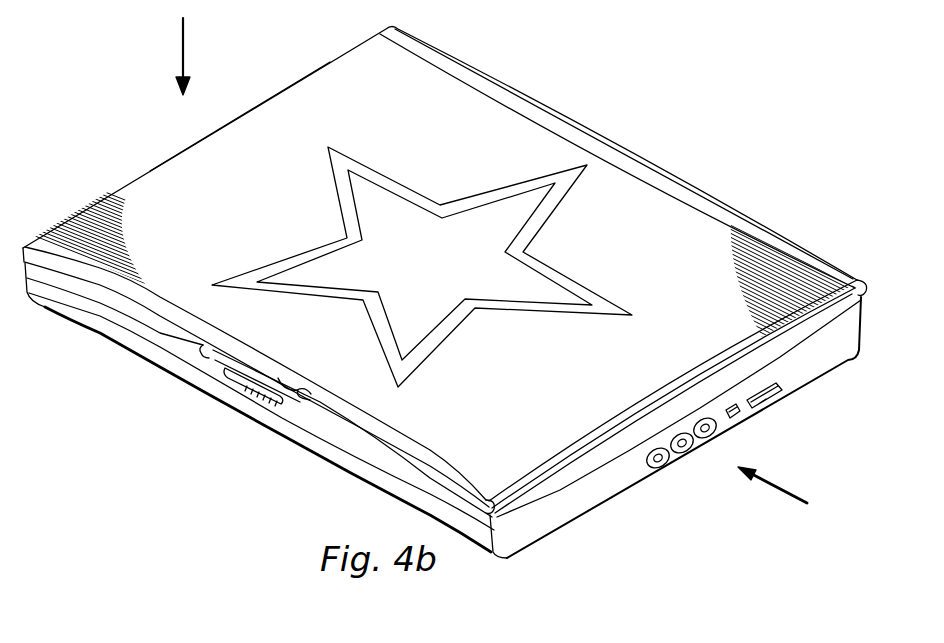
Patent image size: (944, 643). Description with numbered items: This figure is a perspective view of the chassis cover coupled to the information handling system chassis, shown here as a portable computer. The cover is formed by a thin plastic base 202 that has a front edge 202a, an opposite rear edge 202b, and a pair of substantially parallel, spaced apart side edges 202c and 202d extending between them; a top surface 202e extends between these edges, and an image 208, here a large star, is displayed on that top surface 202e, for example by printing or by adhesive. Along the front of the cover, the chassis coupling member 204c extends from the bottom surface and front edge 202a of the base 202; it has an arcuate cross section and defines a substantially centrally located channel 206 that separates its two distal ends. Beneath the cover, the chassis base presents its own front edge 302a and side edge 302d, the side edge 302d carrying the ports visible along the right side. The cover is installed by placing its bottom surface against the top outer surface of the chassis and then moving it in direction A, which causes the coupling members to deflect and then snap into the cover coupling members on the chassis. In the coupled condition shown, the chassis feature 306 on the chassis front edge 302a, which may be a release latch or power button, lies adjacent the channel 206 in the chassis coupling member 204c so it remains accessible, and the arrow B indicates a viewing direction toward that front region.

The base 202 is at (528, 97).
The front edge 202a is at (297, 380).
The rear edge 202b is at (614, 145).
The side edge 202c is at (149, 168).
The side edge 202d is at (583, 448).
The top surface 202e is at (300, 84).
The chassis coupling member 204c is at (160, 328).
The channel 206 is at (294, 400).
The image 208 is at (338, 193).
The front edge 302a is at (222, 358).
The side edge 302d is at (542, 492).
The chassis feature 306 is at (255, 400).
The direction A is at (182, 47).
The view direction B is at (785, 483).